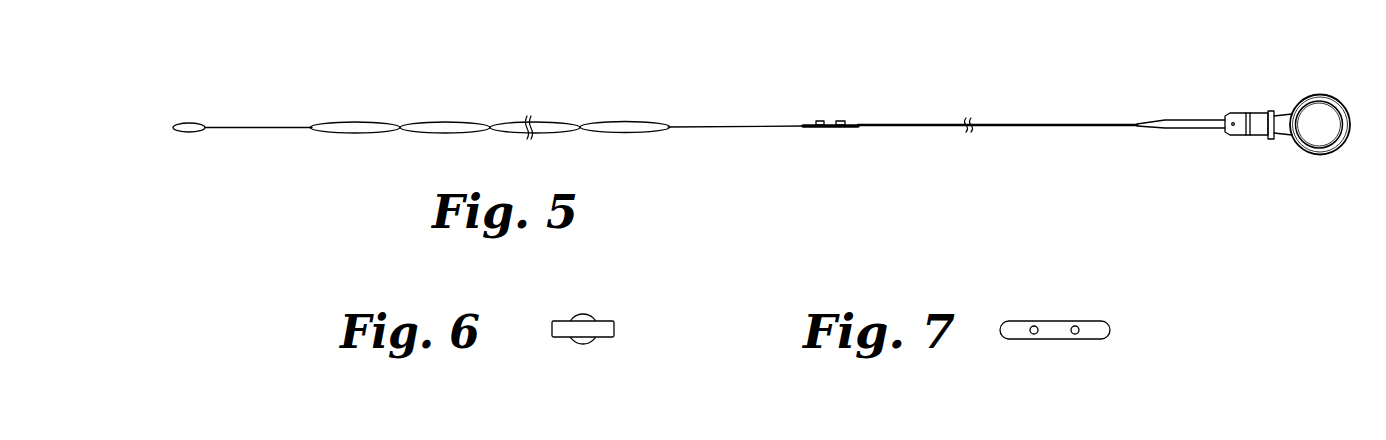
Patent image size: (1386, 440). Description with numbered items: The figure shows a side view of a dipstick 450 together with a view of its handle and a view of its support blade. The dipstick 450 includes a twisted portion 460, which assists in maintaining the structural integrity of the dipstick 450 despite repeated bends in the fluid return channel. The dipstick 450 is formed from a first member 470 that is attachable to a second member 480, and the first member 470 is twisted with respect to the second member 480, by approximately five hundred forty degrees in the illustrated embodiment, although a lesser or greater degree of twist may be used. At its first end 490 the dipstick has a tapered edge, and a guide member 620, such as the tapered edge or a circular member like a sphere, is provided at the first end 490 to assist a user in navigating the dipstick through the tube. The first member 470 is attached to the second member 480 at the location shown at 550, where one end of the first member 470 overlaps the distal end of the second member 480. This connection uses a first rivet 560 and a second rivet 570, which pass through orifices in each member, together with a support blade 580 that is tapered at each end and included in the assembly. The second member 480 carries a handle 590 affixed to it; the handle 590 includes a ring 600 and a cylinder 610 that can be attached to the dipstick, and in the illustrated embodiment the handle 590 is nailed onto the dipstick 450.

In FIG. 5, the dipstick 450 is at (802, 58).
In FIG. 5, the twisted portion 460 is at (478, 95).
In FIG. 5, the first member 470 is at (717, 125).
In FIG. 5, the second member 480 is at (1005, 122).
In FIG. 5, the first end 490 is at (172, 127).
In FIG. 5, the attachment 550 is at (832, 115).
In FIG. 5, the first rivet 560 is at (820, 130).
In FIG. 7, the first rivet 560 is at (1035, 323).
In FIG. 5, the second rivet 570 is at (843, 130).
In FIG. 7, the second rivet 570 is at (1075, 323).
In FIG. 7, the support blade 580 is at (1002, 328).
In FIG. 5, the handle 590 is at (1318, 94).
In FIG. 6, the handle 590 is at (608, 300).
In FIG. 6, the ring 600 is at (617, 330).
In FIG. 6, the cylinder 610 is at (578, 316).
In FIG. 5, the guide member 620 is at (190, 140).